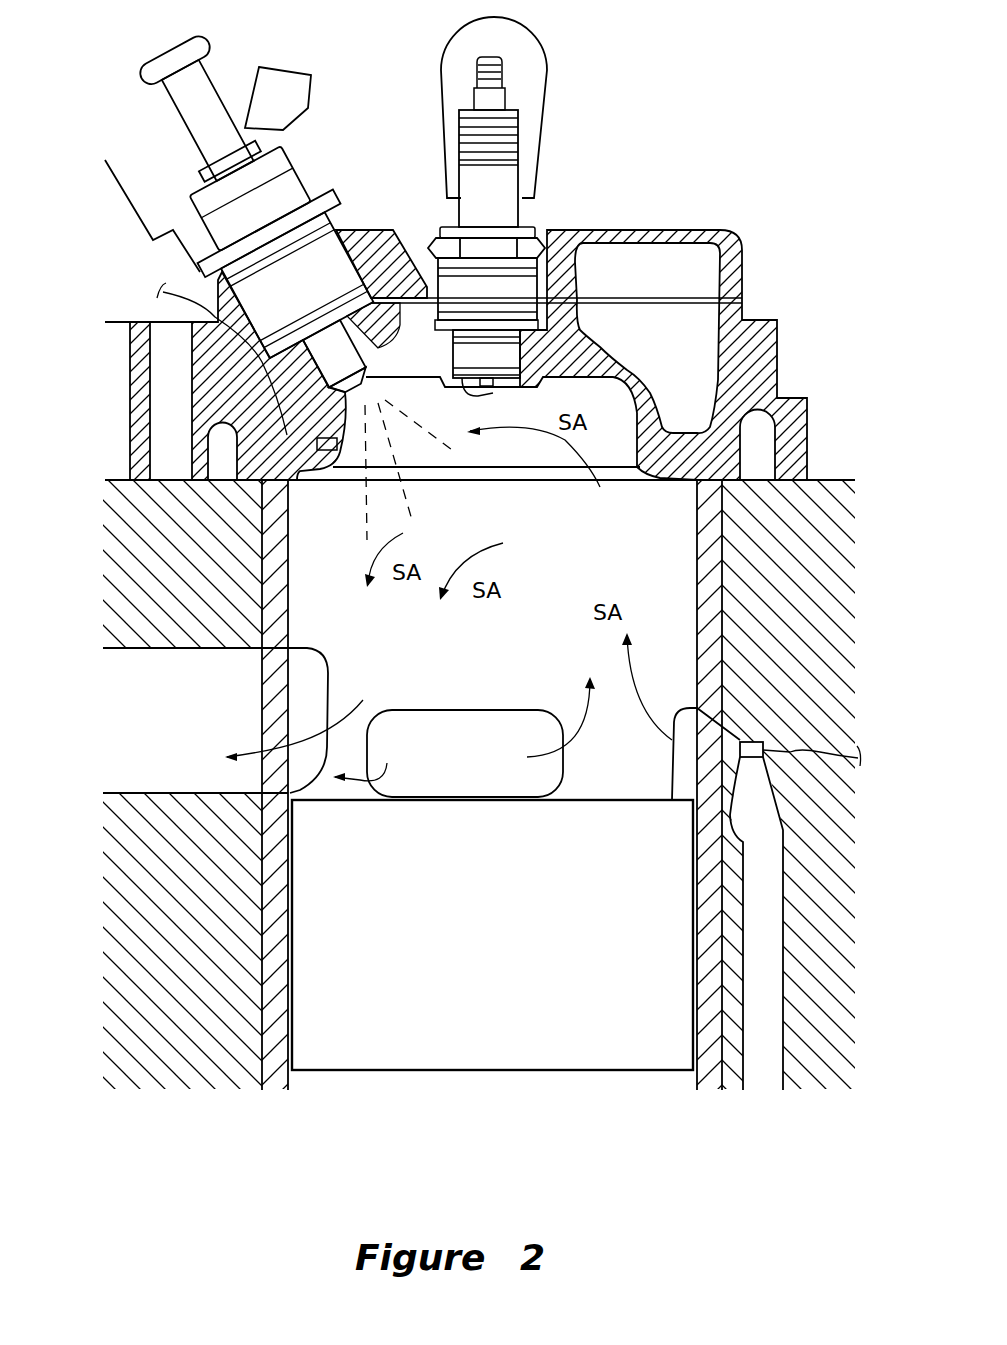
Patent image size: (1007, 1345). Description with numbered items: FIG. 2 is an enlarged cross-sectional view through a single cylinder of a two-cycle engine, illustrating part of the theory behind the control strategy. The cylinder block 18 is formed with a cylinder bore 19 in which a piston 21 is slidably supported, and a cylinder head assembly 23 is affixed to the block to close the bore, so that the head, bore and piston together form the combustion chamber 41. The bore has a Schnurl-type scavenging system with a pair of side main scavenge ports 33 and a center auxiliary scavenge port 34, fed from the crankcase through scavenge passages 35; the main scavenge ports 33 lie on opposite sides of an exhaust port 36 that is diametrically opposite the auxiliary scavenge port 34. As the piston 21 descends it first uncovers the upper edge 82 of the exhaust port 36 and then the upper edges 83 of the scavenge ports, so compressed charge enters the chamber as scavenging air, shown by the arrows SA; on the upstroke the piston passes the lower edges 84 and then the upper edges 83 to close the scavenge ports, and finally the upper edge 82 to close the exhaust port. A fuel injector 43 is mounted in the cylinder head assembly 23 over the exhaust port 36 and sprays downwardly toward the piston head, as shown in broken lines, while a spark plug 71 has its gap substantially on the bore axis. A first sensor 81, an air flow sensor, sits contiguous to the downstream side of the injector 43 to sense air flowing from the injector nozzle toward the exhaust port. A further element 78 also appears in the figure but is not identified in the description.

The cylinder block 18 is at (98, 914).
The cylinder bore 19 is at (696, 540).
The piston 21 is at (460, 1050).
The cylinder head assembly 23 is at (762, 372).
The main scavenge port 33 is at (497, 723).
The auxiliary scavenge port 34 is at (705, 767).
The scavenge passage 35 is at (763, 1073).
The exhaust port 36 is at (317, 688).
The combustion chamber 41 is at (523, 450).
The fuel injector 43 is at (323, 247).
The spark plug 71 is at (503, 210).
The exhaust port 78 is at (733, 785).
The first sensor 81 is at (320, 432).
The upper edge of the exhaust port 82 is at (287, 650).
The upper edge of the scavenge ports 83 is at (433, 713).
The lower edge of the scavenge ports 84 is at (493, 787).